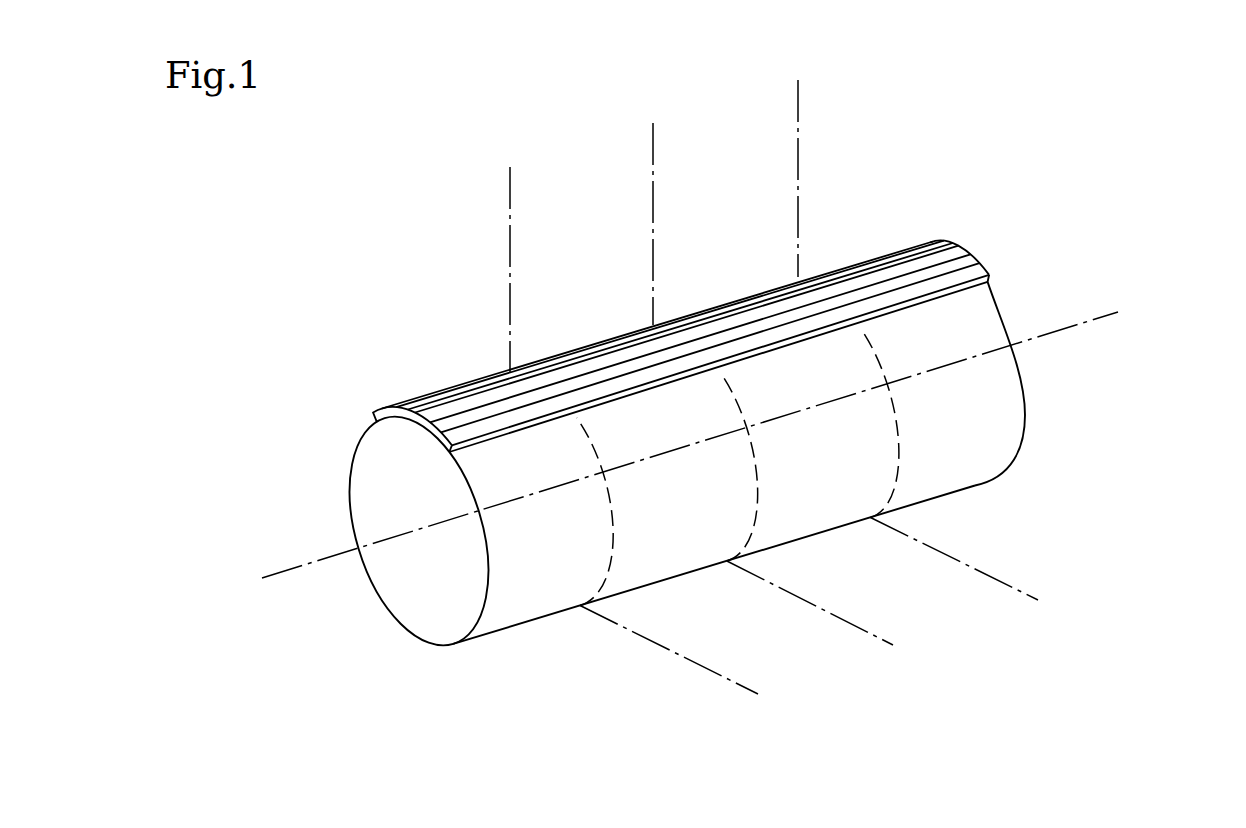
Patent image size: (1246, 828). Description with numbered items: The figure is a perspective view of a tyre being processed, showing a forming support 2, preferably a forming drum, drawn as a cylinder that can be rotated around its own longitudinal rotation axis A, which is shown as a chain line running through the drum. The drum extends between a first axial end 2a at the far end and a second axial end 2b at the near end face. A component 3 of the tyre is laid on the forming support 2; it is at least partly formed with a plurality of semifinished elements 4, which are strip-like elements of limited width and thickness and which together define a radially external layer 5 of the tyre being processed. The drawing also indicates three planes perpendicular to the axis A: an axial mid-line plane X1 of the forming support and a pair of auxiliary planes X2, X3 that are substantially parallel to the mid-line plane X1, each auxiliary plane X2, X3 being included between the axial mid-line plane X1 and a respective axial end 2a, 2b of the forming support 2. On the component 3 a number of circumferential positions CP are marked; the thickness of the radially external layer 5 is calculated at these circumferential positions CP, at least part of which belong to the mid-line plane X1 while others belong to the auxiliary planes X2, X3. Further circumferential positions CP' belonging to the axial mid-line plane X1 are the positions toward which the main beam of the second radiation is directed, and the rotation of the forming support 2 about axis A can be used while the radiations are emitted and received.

The forming support 2 is at (727, 506).
The axial end of the forming support 2a is at (1027, 394).
The axial end of the forming support 2b is at (417, 585).
The component of the tyre being processed 3 is at (638, 280).
The semifinished elements 4 is at (982, 265).
The radially external layer 5 is at (367, 437).
The longitudinal rotation axis A is at (1086, 322).
The circumferential positions CP is at (718, 305).
The circumferential positions CP' is at (728, 285).
The axial mid-line plane X1 is at (777, 371).
The auxiliary plane X2 is at (921, 325).
The auxiliary plane X3 is at (633, 418).